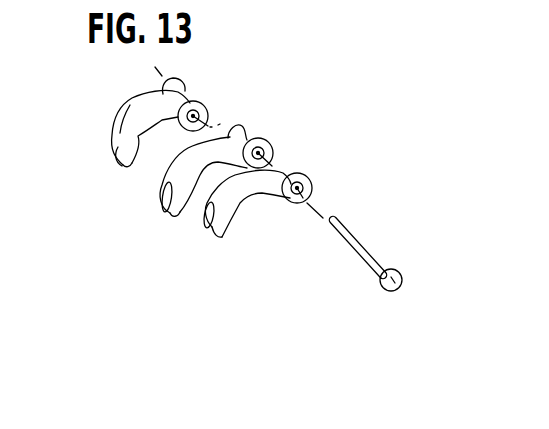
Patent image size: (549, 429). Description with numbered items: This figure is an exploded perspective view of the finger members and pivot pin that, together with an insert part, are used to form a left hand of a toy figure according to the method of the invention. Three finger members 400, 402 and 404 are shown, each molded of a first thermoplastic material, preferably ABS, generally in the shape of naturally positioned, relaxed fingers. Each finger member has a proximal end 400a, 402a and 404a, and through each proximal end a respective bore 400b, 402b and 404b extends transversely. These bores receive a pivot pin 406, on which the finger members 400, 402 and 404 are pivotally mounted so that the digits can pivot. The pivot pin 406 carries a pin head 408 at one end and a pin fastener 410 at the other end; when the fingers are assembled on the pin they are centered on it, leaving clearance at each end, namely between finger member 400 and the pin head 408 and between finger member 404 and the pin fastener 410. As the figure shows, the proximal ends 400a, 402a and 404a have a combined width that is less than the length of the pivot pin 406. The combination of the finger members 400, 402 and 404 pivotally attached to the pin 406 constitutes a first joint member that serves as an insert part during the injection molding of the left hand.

The finger member 400 is at (216, 226).
The proximal end 400a is at (308, 176).
The bore 400b is at (293, 202).
The finger member 402 is at (170, 212).
The proximal end 402a is at (252, 137).
The bore 402b is at (273, 153).
The finger member 404 is at (118, 155).
The proximal end 404a is at (202, 103).
The bore 404b is at (209, 116).
The pivot pin 406 is at (372, 254).
The pin head 408 is at (392, 292).
The pin fastener 410 is at (165, 79).